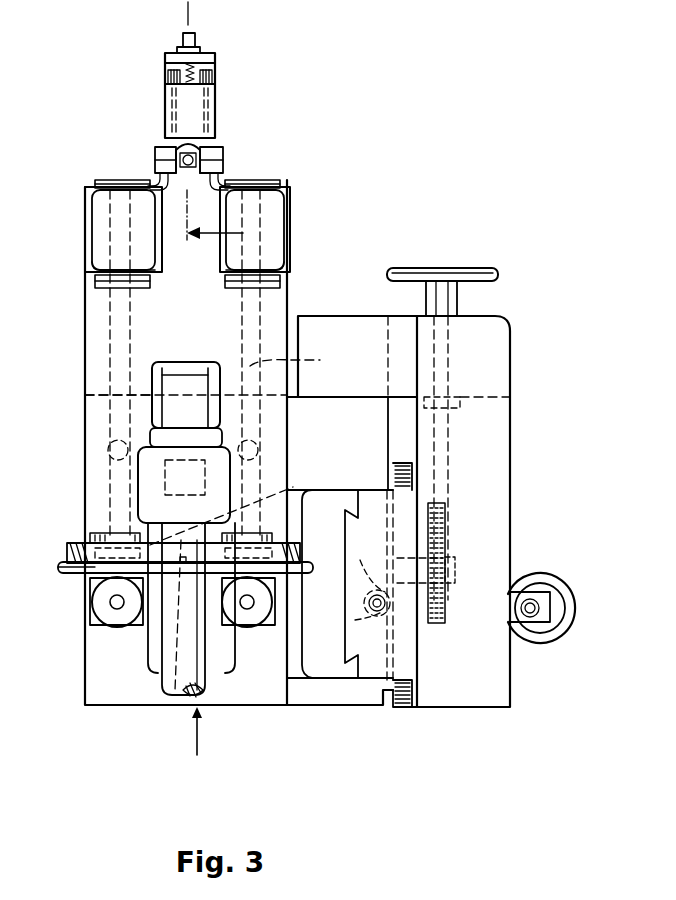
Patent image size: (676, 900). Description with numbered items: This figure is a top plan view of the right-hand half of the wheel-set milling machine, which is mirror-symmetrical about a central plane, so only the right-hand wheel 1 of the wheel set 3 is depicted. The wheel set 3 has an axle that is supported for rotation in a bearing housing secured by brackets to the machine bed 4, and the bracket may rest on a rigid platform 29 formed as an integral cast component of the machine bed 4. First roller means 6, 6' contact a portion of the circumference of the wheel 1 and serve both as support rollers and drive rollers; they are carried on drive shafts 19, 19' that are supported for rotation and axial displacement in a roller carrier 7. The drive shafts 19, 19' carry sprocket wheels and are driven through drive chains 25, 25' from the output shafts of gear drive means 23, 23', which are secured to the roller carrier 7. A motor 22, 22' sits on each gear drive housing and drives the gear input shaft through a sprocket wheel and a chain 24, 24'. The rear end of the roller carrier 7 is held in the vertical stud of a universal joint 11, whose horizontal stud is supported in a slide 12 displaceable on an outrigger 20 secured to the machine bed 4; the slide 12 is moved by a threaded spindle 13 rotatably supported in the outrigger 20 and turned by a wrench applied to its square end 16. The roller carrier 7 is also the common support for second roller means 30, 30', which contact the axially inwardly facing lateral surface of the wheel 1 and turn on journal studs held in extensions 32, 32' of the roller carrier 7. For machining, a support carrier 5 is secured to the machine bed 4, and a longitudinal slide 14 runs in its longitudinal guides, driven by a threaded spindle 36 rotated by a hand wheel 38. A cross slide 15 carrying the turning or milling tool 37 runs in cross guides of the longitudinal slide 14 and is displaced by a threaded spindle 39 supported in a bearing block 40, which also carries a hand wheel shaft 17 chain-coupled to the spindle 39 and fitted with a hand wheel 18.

The wheel 1 is at (68, 545).
The wheel set 3 is at (197, 742).
The machine bed 4 is at (215, 251).
The support carrier 5 is at (490, 447).
The first roller means 6 is at (196, 655).
The first roller means 6' is at (69, 590).
The roller carrier 7 is at (105, 318).
The universal joint 11 is at (223, 160).
The slide 12 is at (195, 112).
The threaded spindle 13 is at (215, 72).
The longitudinal slide 14 is at (373, 628).
The cross slide 15 is at (352, 690).
The square end 16 is at (178, 40).
The hand wheel shaft 17 is at (535, 600).
The hand wheel 18 is at (570, 604).
The drive shaft 19 is at (319, 356).
The drive shaft 19' is at (90, 379).
The outrigger 20 is at (162, 72).
The motor 22 is at (284, 229).
The motor 22' is at (99, 218).
The gear drive means 23 is at (285, 255).
The gear drive means 23' is at (94, 243).
The chain 24 is at (285, 289).
The chain 24' is at (88, 273).
The drive chain 25 is at (280, 168).
The drive chain 25' is at (103, 157).
The rigid platform 29 is at (152, 380).
The second roller means 30 is at (247, 666).
The second roller means 30' is at (115, 666).
The extension 32 is at (259, 666).
The extension 32' is at (86, 631).
The threaded spindle 36 is at (440, 425).
The turning or milling tool 37 is at (182, 570).
The hand wheel 38 is at (498, 278).
The threaded spindle 39 is at (390, 603).
The bearing block 40 is at (505, 596).